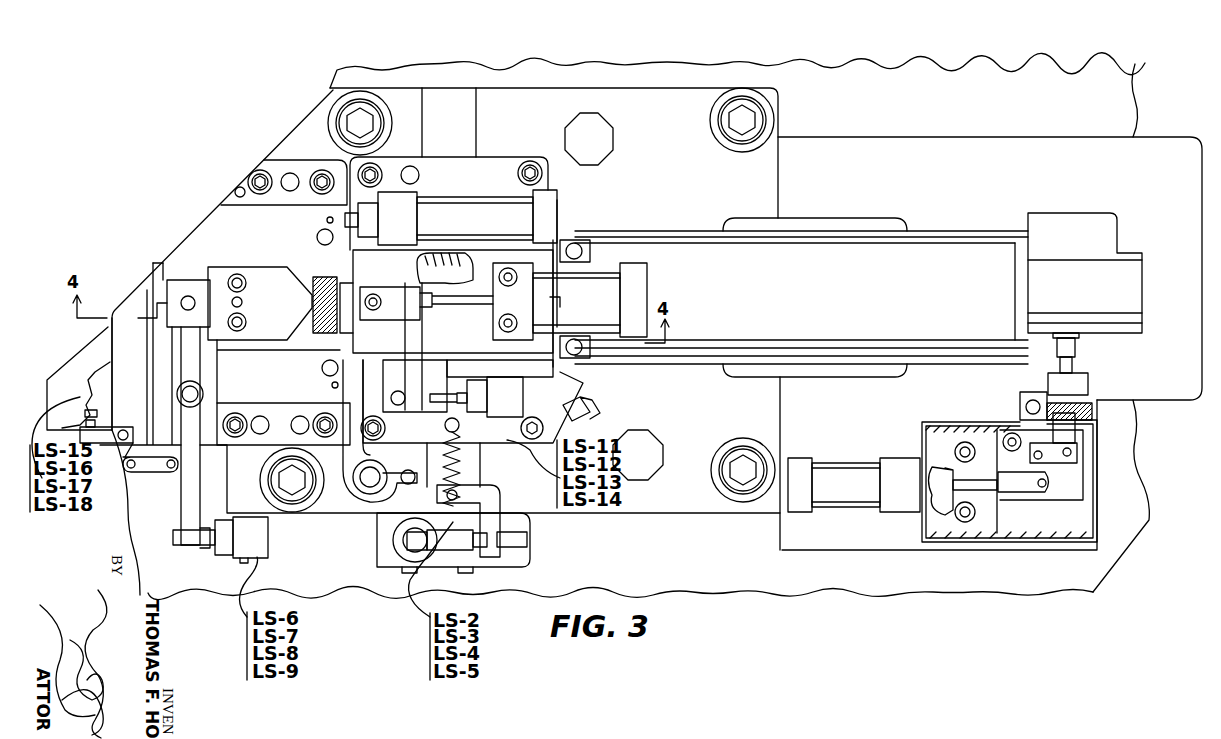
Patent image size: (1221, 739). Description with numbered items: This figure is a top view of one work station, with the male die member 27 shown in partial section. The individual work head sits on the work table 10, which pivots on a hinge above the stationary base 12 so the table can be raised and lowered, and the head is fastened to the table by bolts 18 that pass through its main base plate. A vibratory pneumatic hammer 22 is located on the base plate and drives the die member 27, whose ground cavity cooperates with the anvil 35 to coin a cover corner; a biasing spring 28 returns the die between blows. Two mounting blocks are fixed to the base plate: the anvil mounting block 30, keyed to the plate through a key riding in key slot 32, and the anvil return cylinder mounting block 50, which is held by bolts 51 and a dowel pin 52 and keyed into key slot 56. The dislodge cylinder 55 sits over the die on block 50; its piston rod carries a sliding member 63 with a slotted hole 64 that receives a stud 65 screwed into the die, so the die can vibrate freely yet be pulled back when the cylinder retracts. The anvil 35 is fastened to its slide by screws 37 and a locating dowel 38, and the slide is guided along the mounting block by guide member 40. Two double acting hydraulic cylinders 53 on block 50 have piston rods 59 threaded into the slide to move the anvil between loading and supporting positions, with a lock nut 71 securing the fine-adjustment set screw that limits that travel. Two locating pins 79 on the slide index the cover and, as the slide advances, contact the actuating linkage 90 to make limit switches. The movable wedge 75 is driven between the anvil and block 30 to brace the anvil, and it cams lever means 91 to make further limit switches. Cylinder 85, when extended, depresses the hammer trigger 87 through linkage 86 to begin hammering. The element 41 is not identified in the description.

The work table 10 is at (956, 70).
The stationary base 12 is at (700, 95).
The bolts 18 is at (775, 110).
The vibratory pneumatic hammer 22 is at (945, 234).
The die member 27 is at (330, 282).
The biasing spring 28 is at (420, 273).
The anvil mounting block 30 is at (123, 340).
The key slot 32 is at (265, 517).
The anvil 35 is at (180, 290).
The screws 37 is at (247, 285).
The locating dowel 38 is at (243, 303).
The guide member 40 is at (250, 405).
The pin 41 is at (327, 220).
The anvil return cylinder mounting block 50 is at (491, 440).
The bolts 51 is at (380, 167).
The dowel pin 52 is at (420, 169).
The double acting hydraulic cylinders 53 is at (547, 210).
The dislodge cylinder 55 is at (640, 272).
The key slot 56 is at (476, 99).
The piston rods 59 is at (458, 303).
The sliding member 63 is at (415, 335).
The slotted hole 64 is at (360, 304).
The stud 65 is at (342, 335).
The lock nut 71 is at (584, 406).
The movable wedge 75 is at (166, 262).
The locating pins 79 is at (322, 366).
The cylinder 85 is at (907, 500).
The linkage 86 is at (1038, 498).
The hammer trigger 87 is at (1077, 340).
The actuating linkage 90 is at (357, 514).
The lever means 91 is at (112, 497).